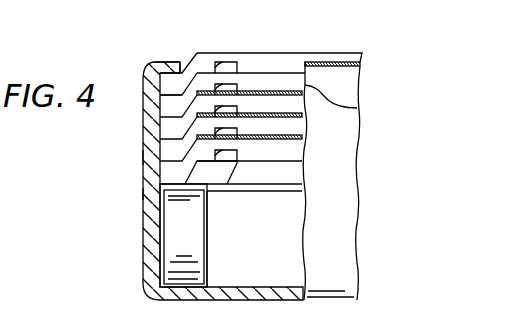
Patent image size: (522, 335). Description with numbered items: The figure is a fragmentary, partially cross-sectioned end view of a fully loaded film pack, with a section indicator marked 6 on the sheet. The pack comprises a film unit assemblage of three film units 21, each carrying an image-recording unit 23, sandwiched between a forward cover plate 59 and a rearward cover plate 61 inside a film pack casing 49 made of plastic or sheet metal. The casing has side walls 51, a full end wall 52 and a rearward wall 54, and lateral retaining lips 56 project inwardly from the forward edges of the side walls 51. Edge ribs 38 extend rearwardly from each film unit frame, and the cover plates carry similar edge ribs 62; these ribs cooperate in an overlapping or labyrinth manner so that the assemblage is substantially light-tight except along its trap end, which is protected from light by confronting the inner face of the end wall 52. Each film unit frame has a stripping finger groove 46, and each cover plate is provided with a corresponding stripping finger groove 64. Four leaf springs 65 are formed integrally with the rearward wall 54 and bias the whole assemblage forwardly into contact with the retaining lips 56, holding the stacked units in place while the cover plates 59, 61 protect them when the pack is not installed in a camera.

The section line indicator 6 is at (7, 334).
The film unit 21 is at (300, 88).
The image-recording unit 23 is at (246, 100).
The edge ribs 38 is at (149, 110).
The stripping finger groove 46 is at (230, 93).
The film pack casing 49 is at (136, 157).
The side walls 51 is at (150, 193).
The full end wall 52 is at (343, 213).
The rearward wall 54 is at (277, 287).
The lateral retaining lips 56 is at (166, 62).
The forward cover plate 59 is at (276, 50).
The rearward cover plate 61 is at (303, 152).
The edge ribs 62 is at (173, 83).
The stripping finger groove 64 is at (227, 62).
The leaf springs 65 is at (195, 217).